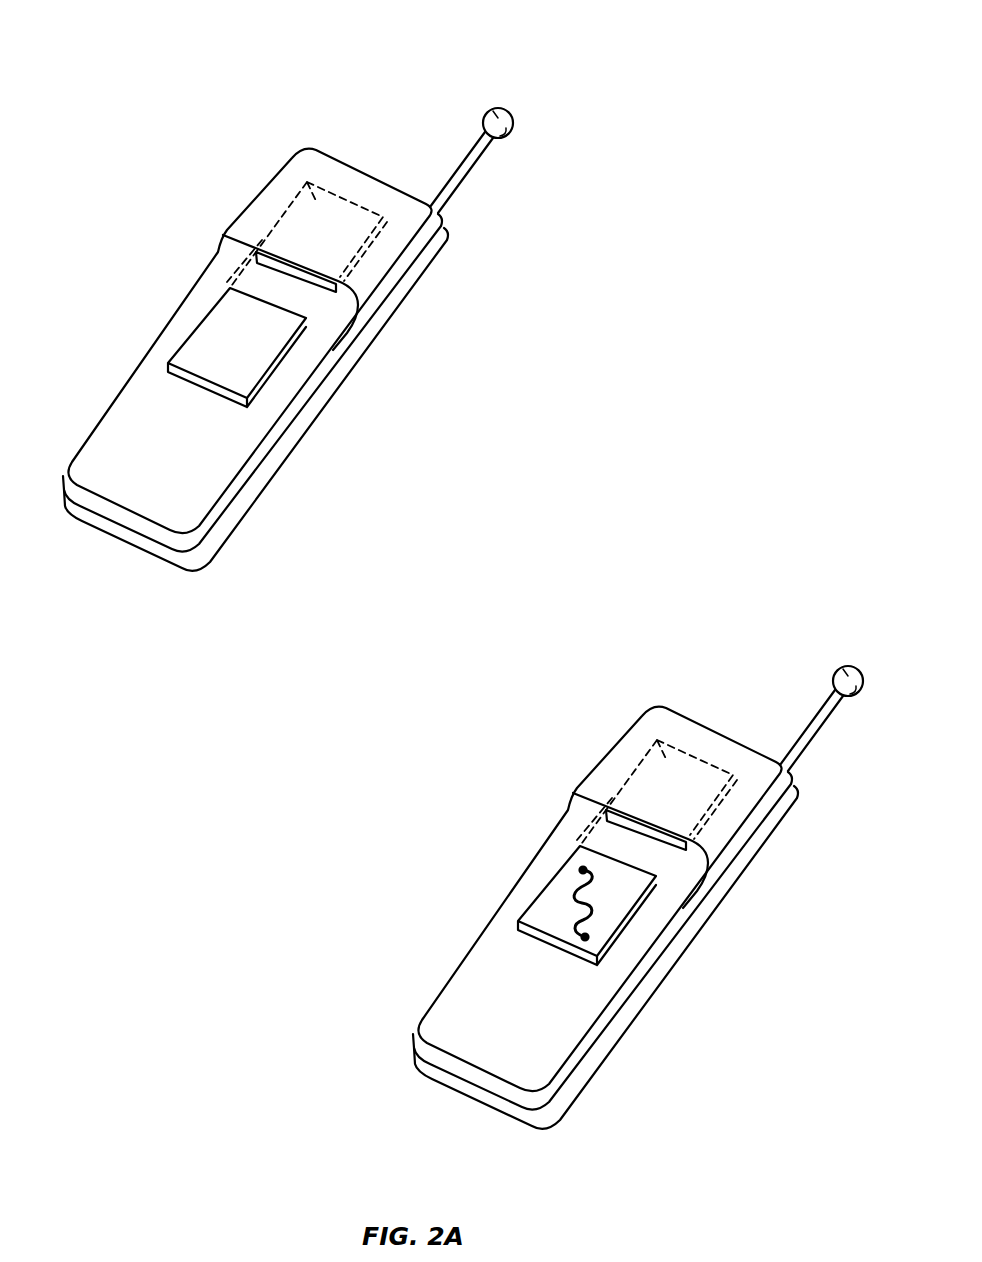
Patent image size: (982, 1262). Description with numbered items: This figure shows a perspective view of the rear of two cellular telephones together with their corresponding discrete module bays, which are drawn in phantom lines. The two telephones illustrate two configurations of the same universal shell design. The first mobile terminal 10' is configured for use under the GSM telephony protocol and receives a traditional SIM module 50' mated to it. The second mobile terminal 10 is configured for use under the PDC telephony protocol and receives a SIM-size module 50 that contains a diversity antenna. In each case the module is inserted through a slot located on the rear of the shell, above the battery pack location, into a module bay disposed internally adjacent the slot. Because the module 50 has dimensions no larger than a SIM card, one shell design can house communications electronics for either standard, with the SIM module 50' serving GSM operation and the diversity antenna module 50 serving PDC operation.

The mobile terminal 10' is at (288, 292).
The mobile terminal 10 is at (638, 865).
The SIM module 50' is at (215, 347).
The diversity antenna module 50 is at (563, 905).